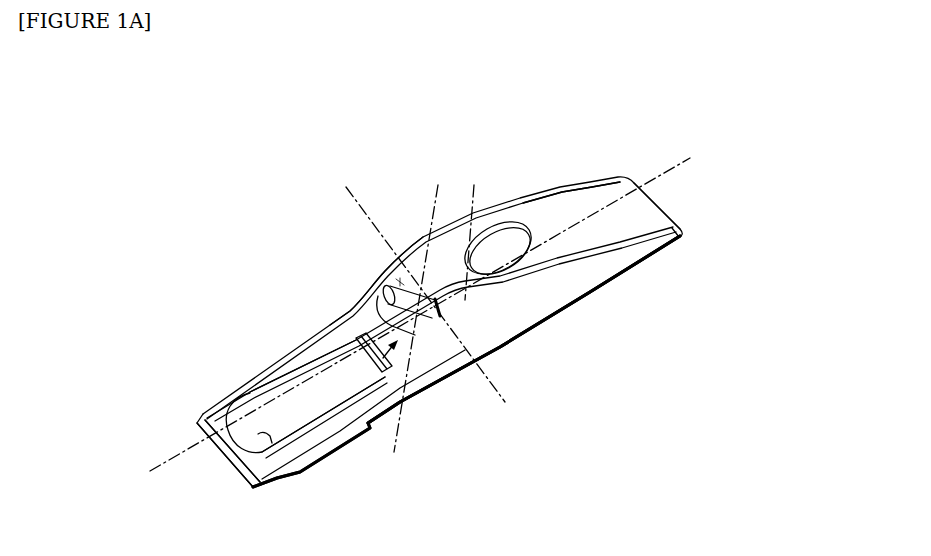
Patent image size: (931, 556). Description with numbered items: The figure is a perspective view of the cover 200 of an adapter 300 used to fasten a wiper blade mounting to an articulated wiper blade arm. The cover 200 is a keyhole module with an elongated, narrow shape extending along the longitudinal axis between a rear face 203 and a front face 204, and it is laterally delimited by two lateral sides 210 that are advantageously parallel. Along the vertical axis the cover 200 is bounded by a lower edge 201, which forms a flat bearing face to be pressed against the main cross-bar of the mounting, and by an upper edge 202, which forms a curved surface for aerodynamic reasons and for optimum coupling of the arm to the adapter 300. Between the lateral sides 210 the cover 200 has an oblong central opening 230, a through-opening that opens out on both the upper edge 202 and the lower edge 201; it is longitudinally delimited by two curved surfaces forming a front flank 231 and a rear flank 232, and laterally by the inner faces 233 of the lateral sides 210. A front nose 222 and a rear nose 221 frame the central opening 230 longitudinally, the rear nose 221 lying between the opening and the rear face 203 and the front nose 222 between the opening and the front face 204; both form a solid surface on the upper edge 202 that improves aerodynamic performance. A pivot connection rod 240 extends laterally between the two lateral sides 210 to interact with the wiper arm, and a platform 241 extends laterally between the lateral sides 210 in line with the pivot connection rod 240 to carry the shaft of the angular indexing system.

The cover 200 is at (572, 148).
The adapter 300 is at (572, 148).
The lower edge 201 is at (527, 330).
The upper edge 202 is at (328, 323).
The rear face 203 is at (670, 206).
The front face 204 is at (232, 462).
The lateral sides 210 is at (555, 300).
The rear nose 221 is at (580, 207).
The front nose 222 is at (215, 415).
The central opening 230 is at (292, 398).
The front flank 231 is at (268, 438).
The rear flank 232 is at (497, 242).
The inner faces 233 is at (247, 397).
The pivot connection rod 240 is at (402, 278).
The platform 241 is at (377, 372).